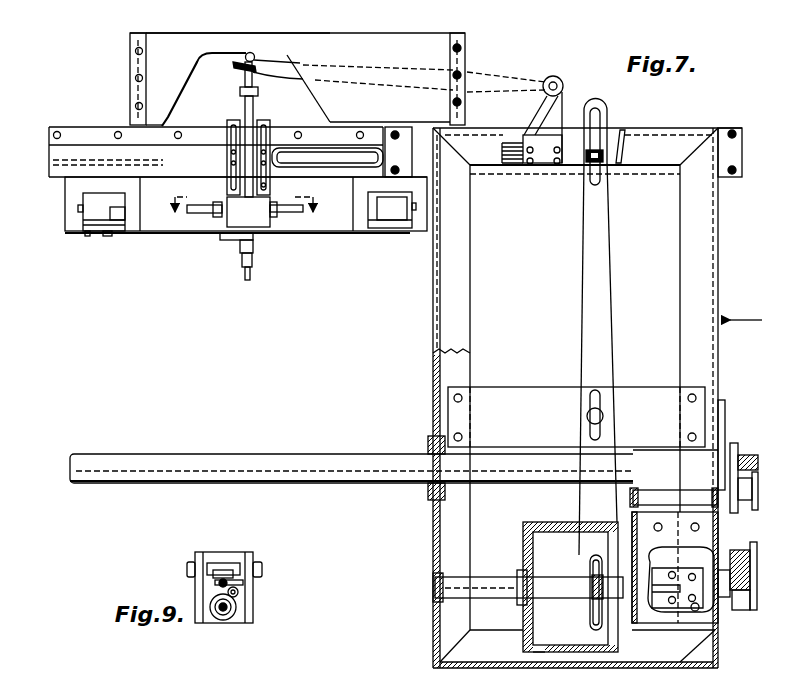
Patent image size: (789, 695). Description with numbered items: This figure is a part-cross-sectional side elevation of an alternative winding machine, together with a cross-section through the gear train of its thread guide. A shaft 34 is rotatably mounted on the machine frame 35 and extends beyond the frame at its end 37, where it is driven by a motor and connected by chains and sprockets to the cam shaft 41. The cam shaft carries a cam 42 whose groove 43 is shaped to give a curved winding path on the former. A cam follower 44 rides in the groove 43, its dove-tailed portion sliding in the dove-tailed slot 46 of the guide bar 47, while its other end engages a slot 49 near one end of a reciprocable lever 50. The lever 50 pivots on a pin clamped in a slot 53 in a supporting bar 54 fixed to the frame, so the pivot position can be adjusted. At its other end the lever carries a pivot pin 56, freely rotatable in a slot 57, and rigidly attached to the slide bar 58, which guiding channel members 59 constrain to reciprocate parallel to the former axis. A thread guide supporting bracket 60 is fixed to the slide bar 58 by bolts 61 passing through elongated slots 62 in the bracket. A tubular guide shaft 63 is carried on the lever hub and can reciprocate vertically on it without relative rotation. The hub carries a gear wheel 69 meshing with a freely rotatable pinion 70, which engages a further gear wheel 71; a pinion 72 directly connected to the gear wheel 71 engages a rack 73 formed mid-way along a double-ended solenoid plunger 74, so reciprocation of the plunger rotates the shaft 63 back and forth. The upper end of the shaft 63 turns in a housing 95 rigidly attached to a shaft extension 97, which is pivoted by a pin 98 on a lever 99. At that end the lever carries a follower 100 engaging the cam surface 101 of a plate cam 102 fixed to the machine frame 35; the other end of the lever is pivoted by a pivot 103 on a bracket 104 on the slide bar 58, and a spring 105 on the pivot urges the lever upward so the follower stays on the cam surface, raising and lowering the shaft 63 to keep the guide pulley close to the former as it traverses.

In FIG. 7, the shaft 34 is at (353, 462).
In FIG. 7, the machine frame 35 is at (432, 527).
In FIG. 7, the end of the shaft 37 is at (740, 452).
In FIG. 7, the cam shaft 41 is at (488, 584).
In FIG. 7, the cam 42 is at (567, 627).
In FIG. 7, the groove 43 is at (538, 655).
In FIG. 7, the cam follower 44 is at (580, 572).
In FIG. 7, the dove-tailed slot 46 is at (663, 590).
In FIG. 7, the guide bar 47 is at (665, 568).
In FIG. 7, the slot 49 is at (588, 617).
In FIG. 7, the reciprocable lever 50 is at (607, 288).
In FIG. 7, the slot 53 is at (602, 399).
In FIG. 7, the supporting bar 54 is at (633, 387).
In FIG. 7, the pivot pin 56 is at (607, 175).
In FIG. 7, the slot 57 is at (603, 112).
In FIG. 7, the slide bar 58 is at (320, 147).
In FIG. 7, the guiding channel members 59 is at (632, 163).
In FIG. 7, the thread guide supporting bracket 60 is at (240, 123).
In FIG. 7, the bolts 61 is at (231, 163).
In FIG. 7, the elongated slots 62 is at (268, 184).
In FIG. 7, the tubular guide shaft 63 is at (227, 190).
In FIG. 9, the gear wheel 69 is at (223, 620).
In FIG. 9, the pinion 70 is at (238, 595).
In FIG. 9, the gear wheel 71 is at (219, 583).
In FIG. 9, the pinion 72 is at (243, 583).
In FIG. 9, the rack 73 is at (227, 563).
In FIG. 9, the double-ended solenoid plunger 74 is at (190, 562).
In FIG. 7, the housing 95 is at (240, 90).
In FIG. 7, the shaft extension 97 is at (255, 80).
In FIG. 7, the pin 98 is at (258, 57).
In FIG. 7, the lever 99 is at (288, 70).
In FIG. 7, the follower 100 is at (253, 53).
In FIG. 7, the cam surface 101 is at (186, 78).
In FIG. 7, the plate cam 102 is at (228, 50).
In FIG. 7, the pivot 103 is at (553, 75).
In FIG. 7, the bracket 104 is at (537, 113).
In FIG. 7, the spring 105 is at (508, 80).